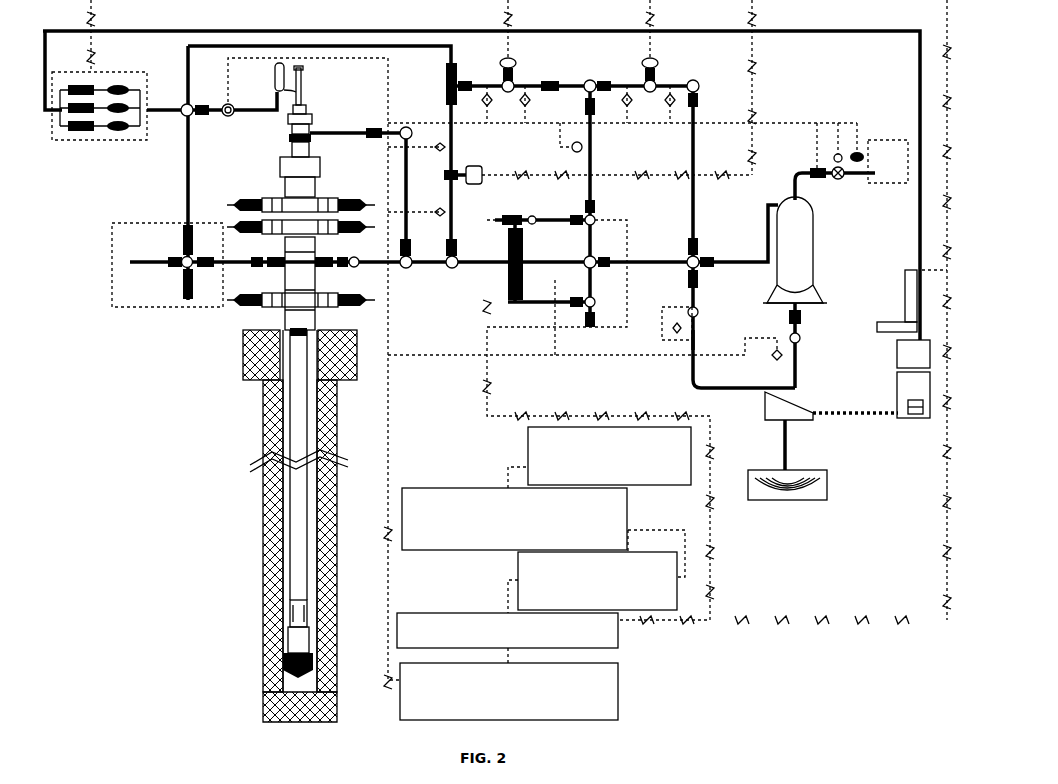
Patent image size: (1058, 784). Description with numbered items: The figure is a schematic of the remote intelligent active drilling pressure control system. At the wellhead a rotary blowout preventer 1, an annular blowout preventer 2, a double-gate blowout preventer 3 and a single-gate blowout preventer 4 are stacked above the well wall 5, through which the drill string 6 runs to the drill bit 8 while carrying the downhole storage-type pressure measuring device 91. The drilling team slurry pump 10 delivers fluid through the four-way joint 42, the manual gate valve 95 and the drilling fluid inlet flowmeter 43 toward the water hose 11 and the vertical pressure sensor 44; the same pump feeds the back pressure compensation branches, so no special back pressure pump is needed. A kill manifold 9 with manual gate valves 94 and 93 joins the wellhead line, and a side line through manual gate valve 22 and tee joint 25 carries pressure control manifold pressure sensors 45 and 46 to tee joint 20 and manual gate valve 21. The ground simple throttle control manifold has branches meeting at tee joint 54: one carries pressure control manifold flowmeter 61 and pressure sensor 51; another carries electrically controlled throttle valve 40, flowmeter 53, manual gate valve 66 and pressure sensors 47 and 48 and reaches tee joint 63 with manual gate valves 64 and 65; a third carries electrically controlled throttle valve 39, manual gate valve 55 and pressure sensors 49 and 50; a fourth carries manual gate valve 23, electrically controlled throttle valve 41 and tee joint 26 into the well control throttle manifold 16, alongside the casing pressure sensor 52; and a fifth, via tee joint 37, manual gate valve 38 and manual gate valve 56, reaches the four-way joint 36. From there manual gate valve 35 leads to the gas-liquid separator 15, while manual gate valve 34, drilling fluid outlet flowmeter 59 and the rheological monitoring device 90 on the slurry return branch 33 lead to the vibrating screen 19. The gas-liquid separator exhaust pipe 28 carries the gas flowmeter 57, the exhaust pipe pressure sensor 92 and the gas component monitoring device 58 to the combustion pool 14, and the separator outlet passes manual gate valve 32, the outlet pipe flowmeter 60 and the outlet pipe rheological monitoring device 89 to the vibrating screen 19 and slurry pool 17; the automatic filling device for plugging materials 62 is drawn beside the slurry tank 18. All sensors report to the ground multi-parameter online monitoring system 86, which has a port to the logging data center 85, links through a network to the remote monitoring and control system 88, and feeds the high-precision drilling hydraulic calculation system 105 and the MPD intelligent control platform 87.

The rotary blowout preventer 1 is at (287, 117).
The annular blowout preventer 2 is at (279, 165).
The double-gate blowout preventer 3 is at (262, 200).
The single-gate blowout preventer 4 is at (250, 306).
The well wall 5 is at (263, 405).
The drill string 6 is at (290, 520).
The drill bit 8 is at (283, 665).
The kill manifold 9 is at (150, 310).
The drilling team slurry pump 10 is at (95, 142).
The water hose 11 is at (304, 73).
The combustion pool 14 is at (878, 185).
The gas-liquid separator 15 is at (818, 262).
The well control throttle manifold 16 is at (627, 312).
The slurry pool 17 is at (830, 480).
The slurry tank 18 is at (897, 390).
The vibrating screen 19 is at (760, 408).
The tee joint T1 20 is at (406, 269).
The manual gate valve SV1 21 is at (413, 246).
The manual gate valve SV2 22 is at (368, 130).
The manual gate valve SV3 23 is at (447, 232).
The tee joint T3 25 is at (413, 133).
The tee joint T4 26 is at (452, 269).
The gas-liquid separator exhaust pipe 28 is at (838, 180).
The manual gate valve SV5 32 is at (802, 318).
The slurry return branch 33 is at (696, 343).
The manual gate valve SV6 34 is at (698, 284).
The manual gate valve SV7 35 is at (712, 255).
The four-way joint SC4 36 is at (686, 258).
The tee joint T5 37 is at (698, 80).
The manual gate valve SV8 38 is at (698, 101).
The electrically controlled throttle valve V1 39 is at (657, 63).
The electrically controlled throttle valve V2 40 is at (514, 63).
The electrically controlled throttle valve V3 41 is at (482, 166).
The four-way joint SC1 42 is at (183, 104).
The drilling fluid inlet flowmeter F1 43 is at (228, 117).
The vertical pressure sensor P1 44 is at (272, 94).
The pressure control manifold pressure sensor P2 45 is at (436, 150).
The pressure control manifold pressure sensor P3 46 is at (437, 210).
The pressure control manifold pressure sensor P4 47 is at (484, 104).
The pressure control manifold pressure sensor P5 48 is at (522, 104).
The pressure control manifold pressure sensor P6 49 is at (624, 104).
The pressure control manifold pressure sensor P7 50 is at (667, 104).
The pressure control manifold pressure sensor P8 51 is at (572, 152).
The casing pressure sensor P9 52 is at (523, 265).
The pressure control manifold flowmeter F2 53 is at (558, 73).
The tee joint T6 54 is at (590, 79).
The manual gate valve SV9 55 is at (605, 80).
The manual gate valve SV10 56 is at (698, 242).
The gas-liquid separator exhaust pipe gas flowmeter F6 57 is at (810, 168).
The gas-liquid separator exhaust pipe gas component monitoring device 58 is at (870, 155).
The drilling fluid outlet flowmeter F5 59 is at (698, 315).
The gas-liquid separator outlet pipe flowmeter F4 60 is at (800, 342).
The pressure control manifold flowmeter F3 61 is at (596, 108).
The automatic filling device for plugging materials 62 is at (903, 318).
The tee joint T7 63 is at (445, 84).
The manual gate valve SV11 64 is at (457, 70).
The manual gate valve SV12 65 is at (445, 98).
The manual gate valve SV13 66 is at (475, 77).
The logging data center 85 is at (663, 480).
The ground multi-parameter online monitoring system 86 is at (412, 550).
The MPD intelligent control system 87 is at (483, 613).
The remote monitoring and control system 88 is at (618, 707).
The gas-liquid separator outlet pipe drilling fluid rheological monitoring device R2 89 is at (776, 362).
The slurry return branch drilling fluid rheological monitoring device R1 90 is at (672, 340).
The downhole storage-type pressure measuring device 91 is at (288, 602).
The gas-liquid separator exhaust pipe pressure sensor P10 92 is at (842, 155).
The manual gate valve SV26 93 is at (360, 250).
The manual gate valve SV27 94 is at (257, 268).
The manual gate valve SV28 95 is at (202, 116).
The high-precision drilling hydraulic calculation software 105 is at (658, 553).